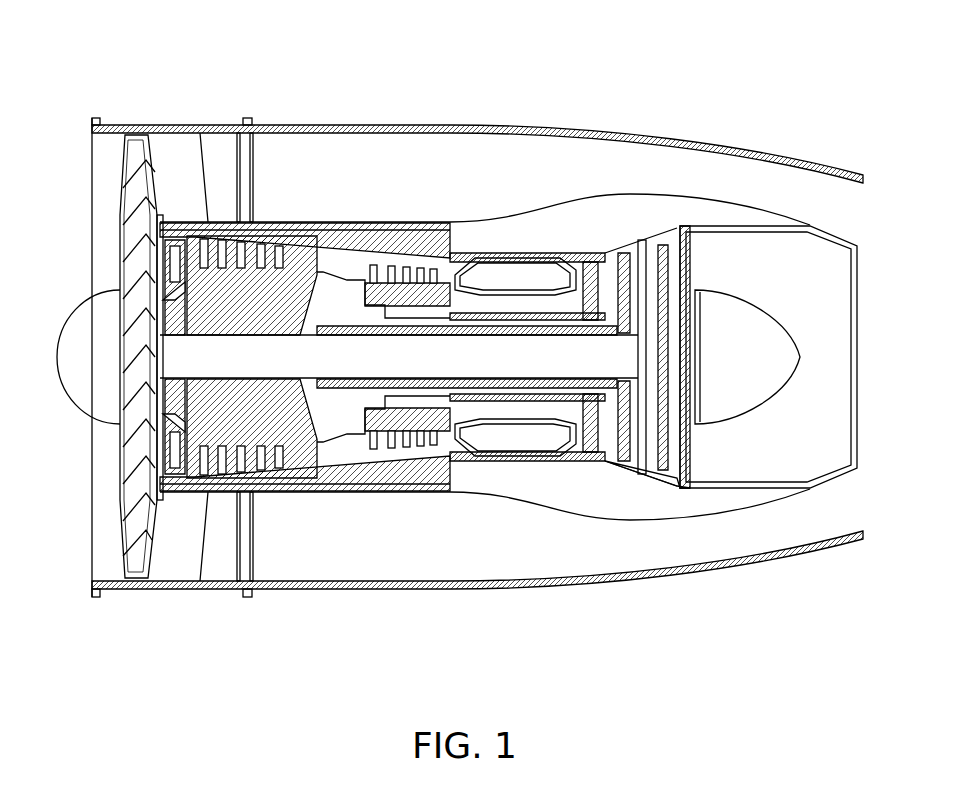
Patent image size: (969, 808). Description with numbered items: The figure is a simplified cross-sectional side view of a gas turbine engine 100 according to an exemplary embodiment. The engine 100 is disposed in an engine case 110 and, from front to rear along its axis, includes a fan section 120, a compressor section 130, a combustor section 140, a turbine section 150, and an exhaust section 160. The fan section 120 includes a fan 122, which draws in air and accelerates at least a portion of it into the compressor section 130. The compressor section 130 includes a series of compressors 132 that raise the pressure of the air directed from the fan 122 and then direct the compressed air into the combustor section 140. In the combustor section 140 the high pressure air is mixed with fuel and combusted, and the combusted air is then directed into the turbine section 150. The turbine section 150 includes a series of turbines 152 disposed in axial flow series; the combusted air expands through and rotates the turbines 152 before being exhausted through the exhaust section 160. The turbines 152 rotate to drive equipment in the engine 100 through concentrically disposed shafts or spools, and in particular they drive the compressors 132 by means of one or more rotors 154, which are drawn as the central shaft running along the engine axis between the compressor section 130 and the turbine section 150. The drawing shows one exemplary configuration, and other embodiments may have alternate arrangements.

The gas turbine engine 100 is at (645, 80).
The engine case 110 is at (284, 126).
The fan section 120 is at (167, 622).
The fan 122 is at (120, 213).
The compressor section 130 is at (400, 622).
The compressors 132 is at (268, 318).
The combustor section 140 is at (548, 622).
The turbine section 150 is at (695, 622).
The turbines 152 is at (697, 497).
The rotors 154 is at (318, 336).
The exhaust section 160 is at (810, 622).